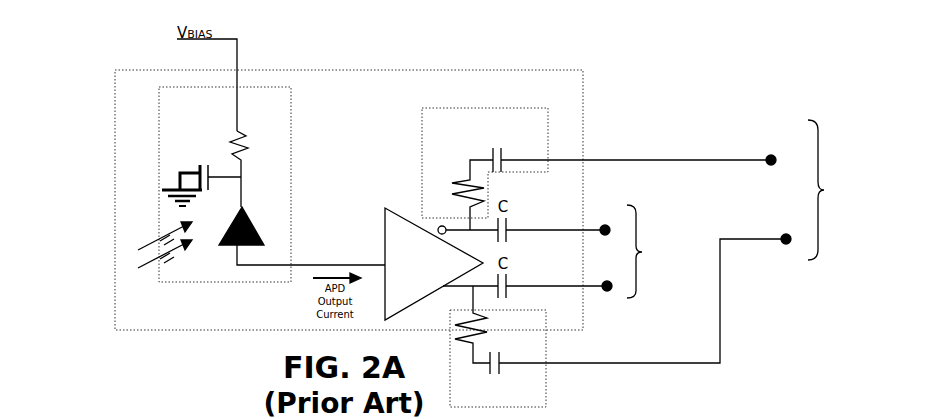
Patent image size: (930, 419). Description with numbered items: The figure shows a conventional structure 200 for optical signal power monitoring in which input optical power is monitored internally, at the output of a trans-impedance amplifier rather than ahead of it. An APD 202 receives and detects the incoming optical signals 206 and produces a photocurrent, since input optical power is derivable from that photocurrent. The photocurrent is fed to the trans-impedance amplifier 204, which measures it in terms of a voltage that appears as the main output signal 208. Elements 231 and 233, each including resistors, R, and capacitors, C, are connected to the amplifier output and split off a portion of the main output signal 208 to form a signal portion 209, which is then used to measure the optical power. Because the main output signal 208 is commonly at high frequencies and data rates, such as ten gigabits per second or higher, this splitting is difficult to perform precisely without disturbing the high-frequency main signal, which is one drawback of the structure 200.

The structure 200 is at (524, 70).
The APD 202 is at (253, 221).
The trans-impedance amplifier 204 is at (401, 218).
The optical signals 206 is at (145, 231).
The main output signal 208 is at (640, 269).
The signal portion 209 is at (812, 226).
The element 231 is at (550, 128).
The element 233 is at (547, 348).